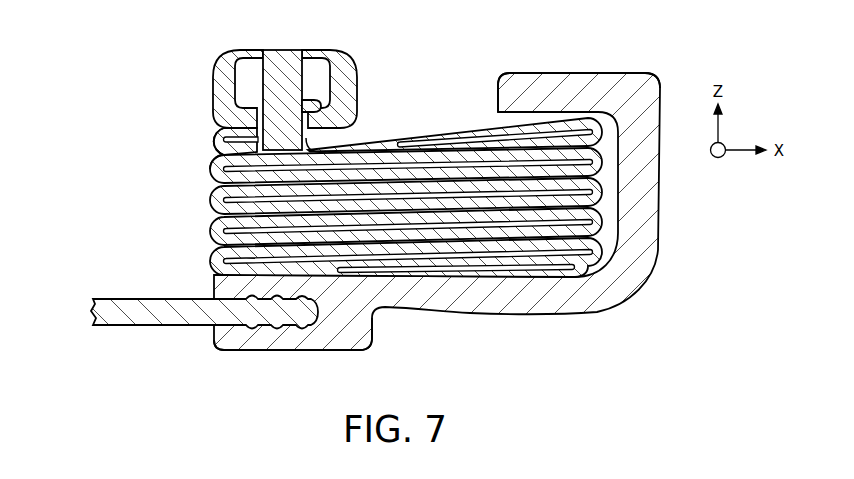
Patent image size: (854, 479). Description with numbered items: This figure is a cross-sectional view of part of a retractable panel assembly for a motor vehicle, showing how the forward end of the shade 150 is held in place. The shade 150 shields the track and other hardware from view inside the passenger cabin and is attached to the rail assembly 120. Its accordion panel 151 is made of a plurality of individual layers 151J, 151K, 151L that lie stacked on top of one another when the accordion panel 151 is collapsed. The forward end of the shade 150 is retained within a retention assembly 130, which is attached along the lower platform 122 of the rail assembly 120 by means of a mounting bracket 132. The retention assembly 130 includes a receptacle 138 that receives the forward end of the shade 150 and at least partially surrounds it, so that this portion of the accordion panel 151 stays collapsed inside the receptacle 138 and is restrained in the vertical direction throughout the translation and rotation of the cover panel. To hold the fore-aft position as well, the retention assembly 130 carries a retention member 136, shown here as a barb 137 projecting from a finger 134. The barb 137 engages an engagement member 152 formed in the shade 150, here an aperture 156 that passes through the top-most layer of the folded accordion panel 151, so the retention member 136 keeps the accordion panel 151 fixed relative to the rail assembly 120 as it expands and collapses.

The rail assembly 120 is at (197, 333).
The lower platform 122 is at (203, 299).
The retention assembly 130 is at (617, 315).
The mounting bracket 132 is at (263, 351).
The finger 134 is at (282, 49).
The retention member 136 is at (218, 182).
The barb 137 is at (240, 166).
The receptacle 138 is at (528, 73).
The shade 150 is at (383, 145).
The accordion panel 151 is at (204, 229).
The individual layer 151J is at (546, 122).
The individual layer 151K is at (584, 133).
The individual layer 151L is at (582, 148).
The engagement member 152 is at (321, 106).
The aperture 156 is at (312, 158).